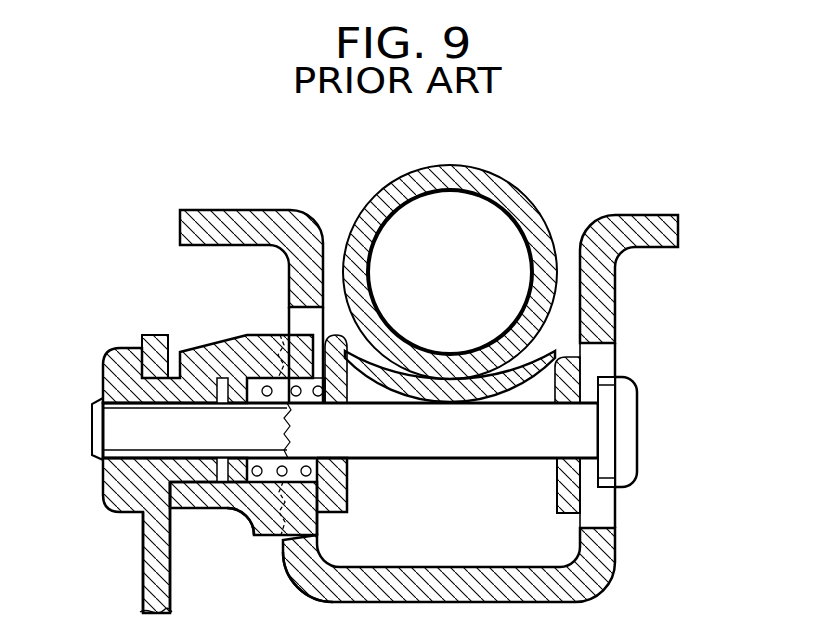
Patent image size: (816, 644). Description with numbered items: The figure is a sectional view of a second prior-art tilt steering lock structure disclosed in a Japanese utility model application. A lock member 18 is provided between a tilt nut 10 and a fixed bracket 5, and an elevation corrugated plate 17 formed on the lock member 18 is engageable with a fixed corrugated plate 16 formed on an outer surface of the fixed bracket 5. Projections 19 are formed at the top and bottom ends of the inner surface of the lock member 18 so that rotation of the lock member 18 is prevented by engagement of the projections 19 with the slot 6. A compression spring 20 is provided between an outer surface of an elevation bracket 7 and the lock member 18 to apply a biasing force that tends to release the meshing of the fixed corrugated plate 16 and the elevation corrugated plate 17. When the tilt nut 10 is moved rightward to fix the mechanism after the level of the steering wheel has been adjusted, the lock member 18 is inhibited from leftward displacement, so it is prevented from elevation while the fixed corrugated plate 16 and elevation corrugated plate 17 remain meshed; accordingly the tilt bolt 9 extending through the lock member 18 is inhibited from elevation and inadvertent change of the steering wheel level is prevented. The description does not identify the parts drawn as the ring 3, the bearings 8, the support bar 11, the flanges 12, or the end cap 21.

The rotor ring 3 is at (528, 200).
The fixed bracket 5 is at (216, 213).
The slot 6 is at (290, 328).
The elevation bracket 7 is at (608, 322).
The bearing 8 is at (345, 462).
The tilt bolt 9 is at (461, 460).
The tilt nut 10 is at (104, 376).
The support bar 11 is at (142, 541).
The flange 12 is at (289, 270).
The fixed corrugated plate 16 is at (262, 540).
The elevation corrugated plate 17 is at (288, 562).
The lock member 18 is at (198, 350).
The projections 19 is at (288, 310).
The compression spring 20 is at (252, 518).
The retaining cap 21 is at (630, 410).